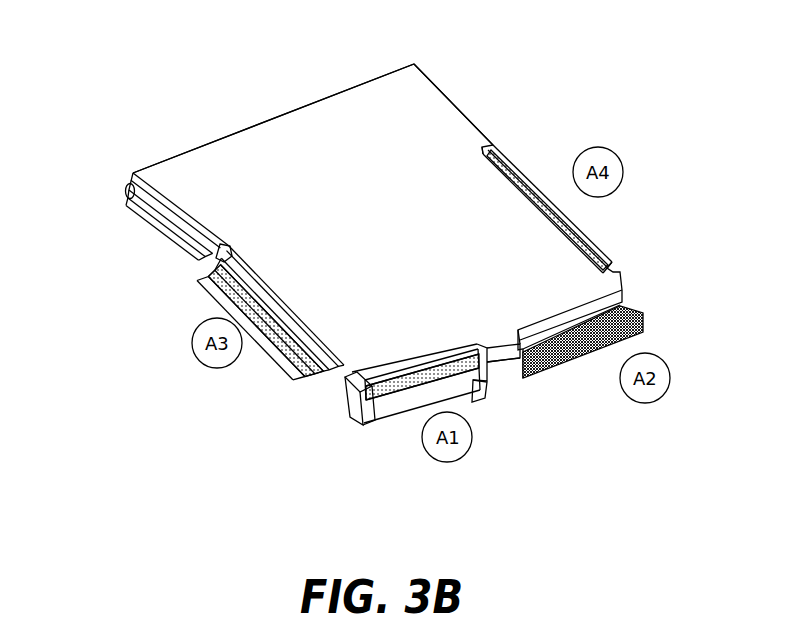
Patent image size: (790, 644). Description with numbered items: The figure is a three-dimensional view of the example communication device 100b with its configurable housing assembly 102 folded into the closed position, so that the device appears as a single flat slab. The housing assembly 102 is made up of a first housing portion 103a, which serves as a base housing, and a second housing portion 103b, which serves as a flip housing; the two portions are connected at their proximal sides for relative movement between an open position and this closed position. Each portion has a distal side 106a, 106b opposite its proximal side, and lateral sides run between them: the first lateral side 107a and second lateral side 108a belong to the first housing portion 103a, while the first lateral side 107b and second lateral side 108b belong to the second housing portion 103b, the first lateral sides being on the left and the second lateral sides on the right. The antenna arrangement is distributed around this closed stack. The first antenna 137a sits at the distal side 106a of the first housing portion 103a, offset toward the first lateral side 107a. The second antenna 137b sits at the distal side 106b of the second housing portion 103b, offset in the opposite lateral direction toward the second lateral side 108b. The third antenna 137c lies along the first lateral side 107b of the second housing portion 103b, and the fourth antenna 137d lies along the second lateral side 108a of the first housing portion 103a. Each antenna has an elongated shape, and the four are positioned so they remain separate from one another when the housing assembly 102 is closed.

The communication device 100b is at (150, 110).
The housing assembly 102 is at (253, 123).
The first housing portion 103a is at (408, 90).
The second housing portion 103b is at (505, 382).
The distal side 106a is at (507, 360).
The distal side 106b is at (490, 390).
The first lateral side 107a is at (187, 228).
The first lateral side 107b is at (183, 255).
The second lateral side 108a is at (465, 112).
The second lateral side 108b is at (373, 425).
The first antenna 137a is at (327, 400).
The second antenna 137b is at (640, 337).
The third antenna 137c is at (210, 302).
The fourth antenna 137d is at (523, 168).